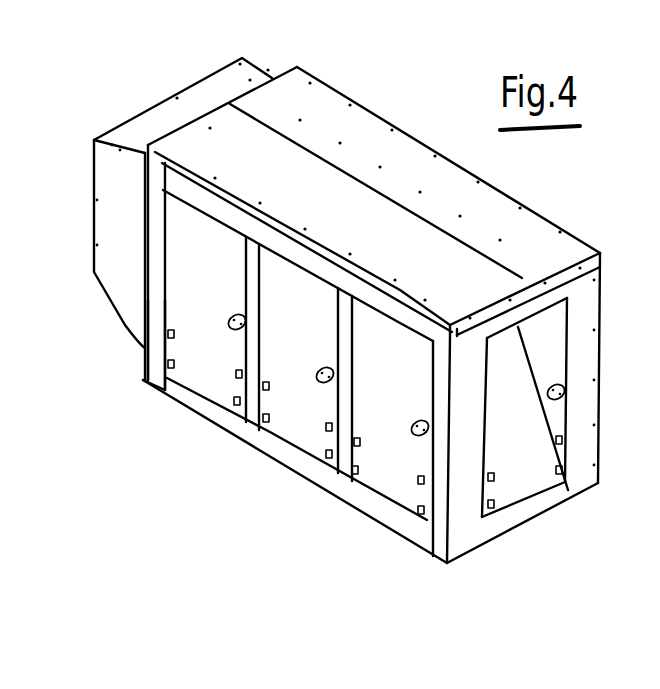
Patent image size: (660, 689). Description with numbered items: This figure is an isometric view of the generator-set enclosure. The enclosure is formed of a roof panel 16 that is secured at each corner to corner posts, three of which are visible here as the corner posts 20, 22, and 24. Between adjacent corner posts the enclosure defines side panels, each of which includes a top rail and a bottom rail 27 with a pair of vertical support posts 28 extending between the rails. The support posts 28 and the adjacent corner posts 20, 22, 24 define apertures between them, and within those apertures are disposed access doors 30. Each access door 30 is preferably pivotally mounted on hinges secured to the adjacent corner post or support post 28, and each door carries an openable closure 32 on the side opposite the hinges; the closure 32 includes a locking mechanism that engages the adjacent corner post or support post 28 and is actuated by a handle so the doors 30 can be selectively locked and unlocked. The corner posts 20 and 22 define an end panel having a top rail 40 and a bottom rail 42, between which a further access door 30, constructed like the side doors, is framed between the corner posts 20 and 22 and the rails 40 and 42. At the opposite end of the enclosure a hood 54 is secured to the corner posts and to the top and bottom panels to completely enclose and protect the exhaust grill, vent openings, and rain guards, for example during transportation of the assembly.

The roof panel 16 is at (347, 93).
The corner post 20 is at (596, 484).
The corner post 22 is at (447, 563).
The corner post 24 is at (148, 350).
The bottom rail 27 is at (228, 420).
The vertical support posts 28 is at (203, 200).
The access doors 30 is at (200, 367).
The openable closure 32 is at (417, 415).
The top rail 40 is at (568, 485).
The bottom rail 42 is at (515, 528).
The hood 54 is at (153, 104).